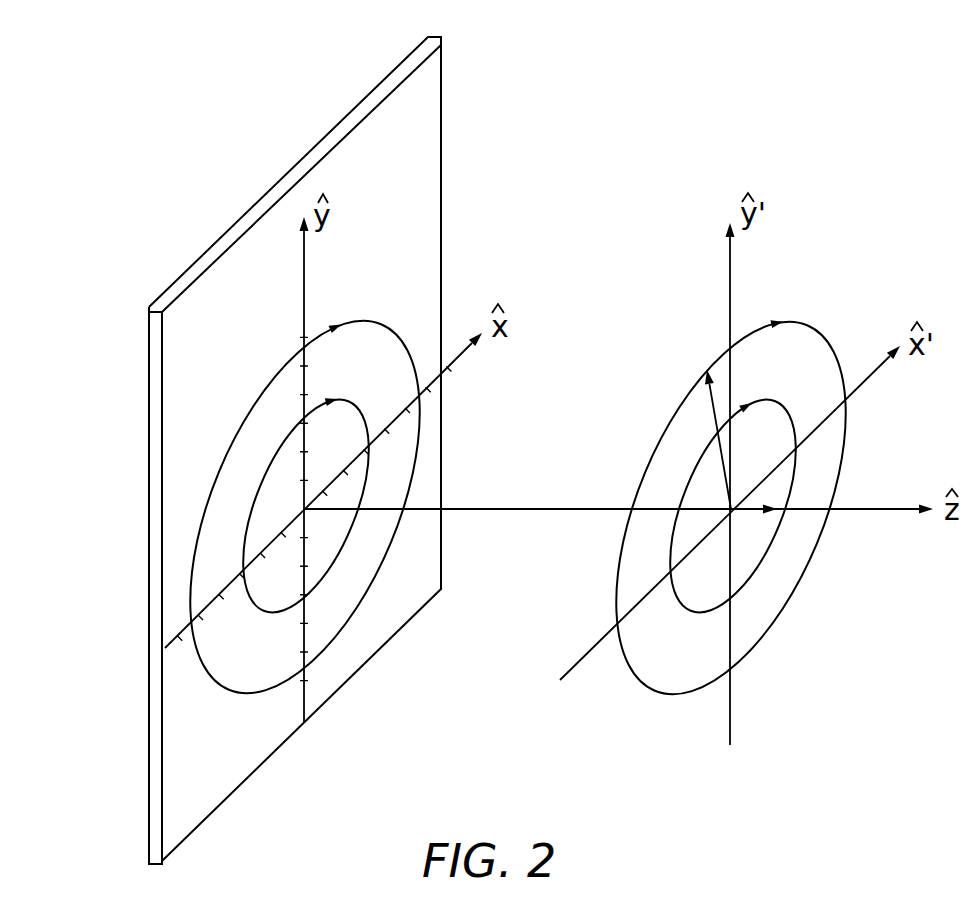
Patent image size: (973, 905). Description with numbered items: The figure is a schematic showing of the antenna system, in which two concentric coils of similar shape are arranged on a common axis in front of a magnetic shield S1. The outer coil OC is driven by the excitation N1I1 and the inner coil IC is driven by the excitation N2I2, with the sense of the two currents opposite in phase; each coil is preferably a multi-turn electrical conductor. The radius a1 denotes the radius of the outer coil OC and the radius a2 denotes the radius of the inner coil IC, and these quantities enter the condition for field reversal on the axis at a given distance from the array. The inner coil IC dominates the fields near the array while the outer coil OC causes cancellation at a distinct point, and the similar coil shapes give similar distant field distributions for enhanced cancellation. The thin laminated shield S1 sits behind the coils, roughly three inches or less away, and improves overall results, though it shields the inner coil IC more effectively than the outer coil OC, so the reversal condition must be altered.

The magnetic shield S1 is at (432, 97).
The outer coil OC is at (281, 370).
The inner coil IC is at (258, 490).
The excitation for the outer coil N1I1 is at (795, 322).
The excitation for the inner coil N2I2 is at (781, 378).
The radius of the outer coil a1 is at (708, 439).
The radius of the inner coil a2 is at (754, 521).